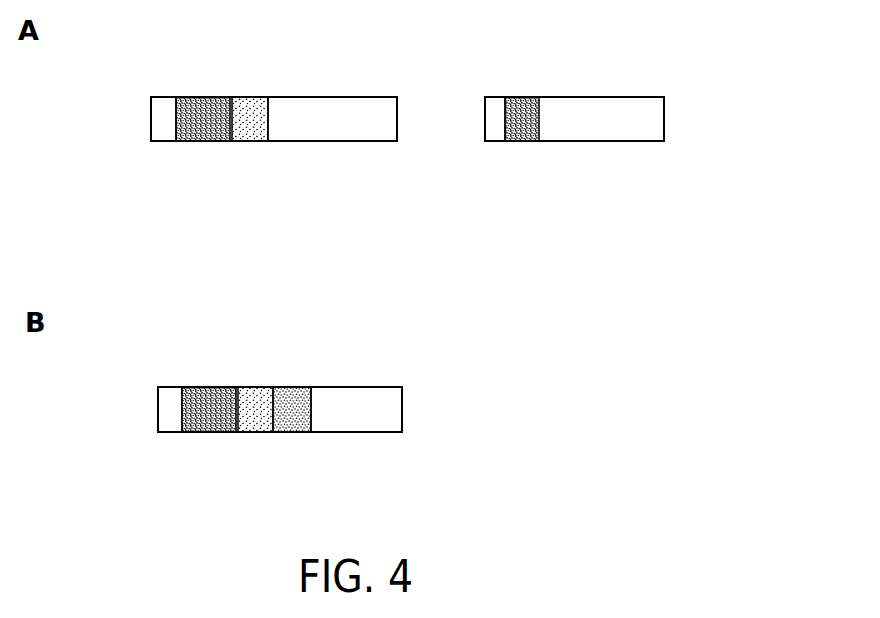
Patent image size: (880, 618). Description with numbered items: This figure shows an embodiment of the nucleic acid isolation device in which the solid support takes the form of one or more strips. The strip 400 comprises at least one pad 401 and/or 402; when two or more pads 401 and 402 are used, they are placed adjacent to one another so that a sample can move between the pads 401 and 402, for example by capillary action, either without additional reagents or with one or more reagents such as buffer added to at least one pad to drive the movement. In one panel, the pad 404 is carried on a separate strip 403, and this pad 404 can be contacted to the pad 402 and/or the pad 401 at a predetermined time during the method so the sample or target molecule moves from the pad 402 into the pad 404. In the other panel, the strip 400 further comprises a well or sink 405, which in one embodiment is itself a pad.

The strip 400 is at (152, 118).
The pad 401 is at (200, 97).
The pad 402 is at (250, 98).
The separate strip 403 is at (665, 118).
The pad 404 is at (522, 97).
The well or sink 405 is at (293, 432).